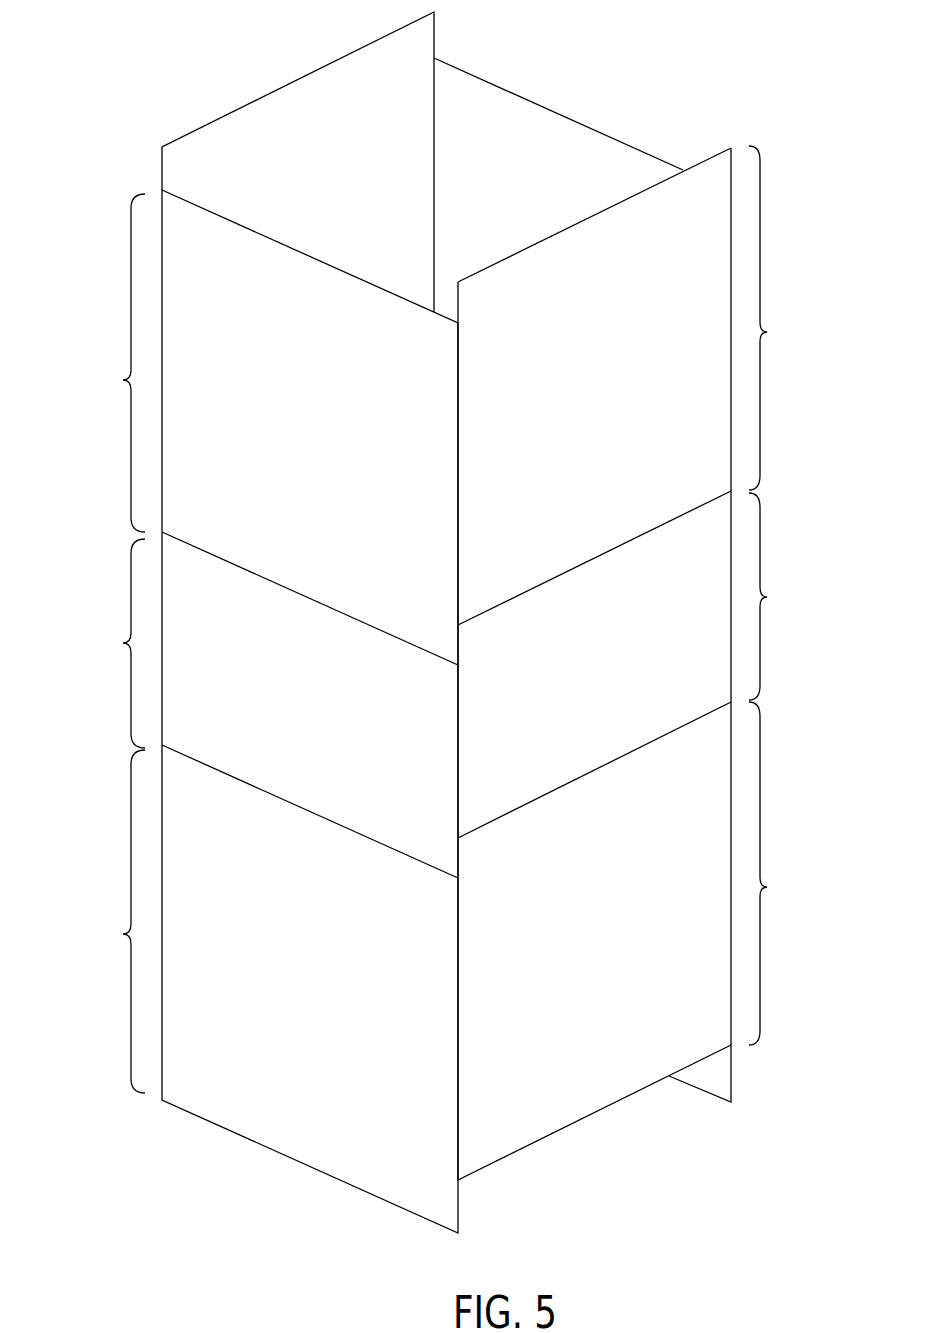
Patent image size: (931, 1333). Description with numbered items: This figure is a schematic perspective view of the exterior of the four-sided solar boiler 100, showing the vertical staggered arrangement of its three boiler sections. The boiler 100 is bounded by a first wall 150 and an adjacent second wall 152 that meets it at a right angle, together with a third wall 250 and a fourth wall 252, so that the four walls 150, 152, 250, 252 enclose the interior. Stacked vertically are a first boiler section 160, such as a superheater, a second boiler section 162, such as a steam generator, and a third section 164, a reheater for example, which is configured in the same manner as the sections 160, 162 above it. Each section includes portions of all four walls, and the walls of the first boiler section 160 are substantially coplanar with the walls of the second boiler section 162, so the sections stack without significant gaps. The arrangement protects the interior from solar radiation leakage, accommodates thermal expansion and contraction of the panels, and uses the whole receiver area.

The boiler 100 is at (101, 108).
The first wall 150 is at (321, 250).
The second wall 152 is at (552, 224).
The first boiler section 160 is at (446, 339).
The second boiler section 162 is at (445, 620).
The third section 164 is at (445, 897).
The third wall 250 is at (273, 79).
The fourth wall 252 is at (570, 108).